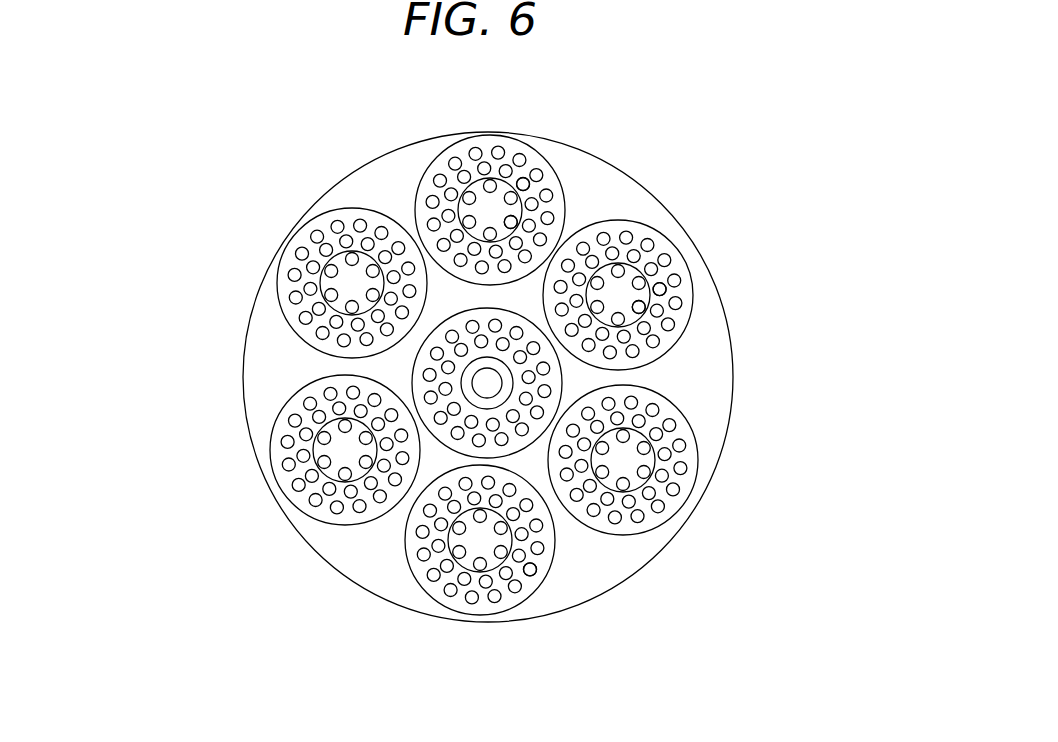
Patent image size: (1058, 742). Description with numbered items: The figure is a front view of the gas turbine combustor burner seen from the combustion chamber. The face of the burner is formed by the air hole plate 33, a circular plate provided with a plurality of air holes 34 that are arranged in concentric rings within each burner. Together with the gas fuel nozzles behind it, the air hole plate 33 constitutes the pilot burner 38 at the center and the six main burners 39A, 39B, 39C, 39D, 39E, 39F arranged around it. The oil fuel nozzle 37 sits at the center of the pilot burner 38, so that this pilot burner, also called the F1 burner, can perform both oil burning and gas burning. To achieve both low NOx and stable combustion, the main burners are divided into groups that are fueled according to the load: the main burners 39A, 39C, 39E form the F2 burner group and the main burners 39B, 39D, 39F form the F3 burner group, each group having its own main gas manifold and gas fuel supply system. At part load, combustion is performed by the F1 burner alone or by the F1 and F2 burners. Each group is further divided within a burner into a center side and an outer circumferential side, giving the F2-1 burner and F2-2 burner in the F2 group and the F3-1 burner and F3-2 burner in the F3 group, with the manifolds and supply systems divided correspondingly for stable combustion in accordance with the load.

The air hole plate 33 is at (617, 570).
The air hole 34 is at (530, 569).
The oil fuel nozzle 37 is at (490, 383).
The pilot burner 38 is at (397, 535).
The main burner 39A is at (520, 143).
The main burner 39B is at (653, 228).
The main burner 39C is at (692, 413).
The main burner 39D is at (480, 613).
The main burner 39E is at (313, 523).
The main burner 39F is at (277, 280).
The F2-1 burner F2-1 is at (520, 216).
The F2-2 burner F2-2 is at (523, 184).
The F3-1 burner F3-1 is at (632, 316).
The F3-2 burner F3-2 is at (660, 289).